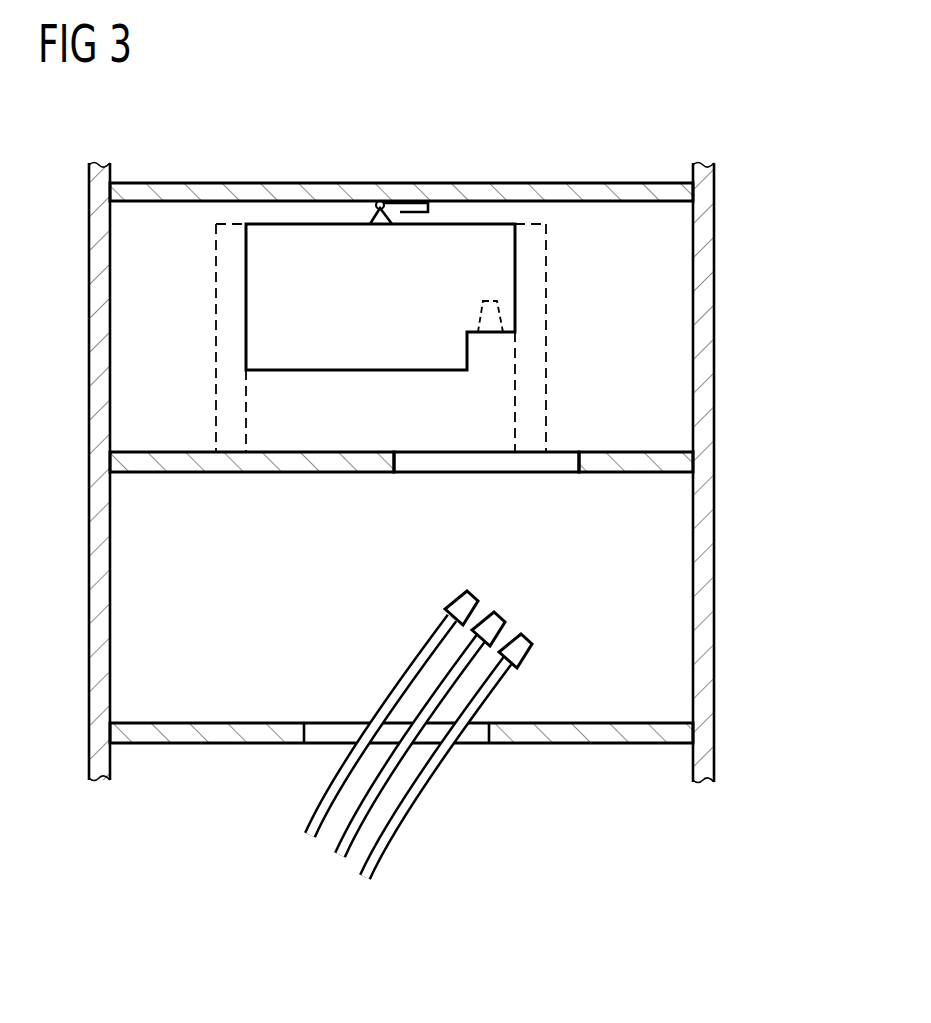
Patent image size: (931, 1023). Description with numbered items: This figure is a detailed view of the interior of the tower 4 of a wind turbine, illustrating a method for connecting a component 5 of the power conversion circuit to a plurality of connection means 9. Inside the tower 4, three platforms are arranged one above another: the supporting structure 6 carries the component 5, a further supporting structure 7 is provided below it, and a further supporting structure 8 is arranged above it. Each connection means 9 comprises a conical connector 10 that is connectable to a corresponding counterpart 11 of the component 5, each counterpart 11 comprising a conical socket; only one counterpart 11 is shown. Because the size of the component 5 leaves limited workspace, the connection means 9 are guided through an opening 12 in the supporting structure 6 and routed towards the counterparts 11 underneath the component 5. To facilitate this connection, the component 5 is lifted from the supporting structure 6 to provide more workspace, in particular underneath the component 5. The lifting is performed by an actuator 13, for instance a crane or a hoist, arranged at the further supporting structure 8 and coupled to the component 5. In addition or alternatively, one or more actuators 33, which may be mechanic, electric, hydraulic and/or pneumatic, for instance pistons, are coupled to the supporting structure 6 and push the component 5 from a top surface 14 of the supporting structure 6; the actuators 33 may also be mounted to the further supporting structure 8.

The tower 4 is at (714, 264).
The component 5 is at (497, 224).
The supporting structure 6 is at (163, 461).
The further supporting structure 7 is at (163, 730).
The further supporting structure 8 is at (163, 190).
The connection means 9 is at (409, 788).
The conical connector 10 is at (526, 640).
The counterpart 11 is at (488, 313).
The opening 12 is at (428, 473).
The actuator 13 is at (411, 190).
The top surface 14 is at (638, 452).
The actuators 33 is at (548, 244).